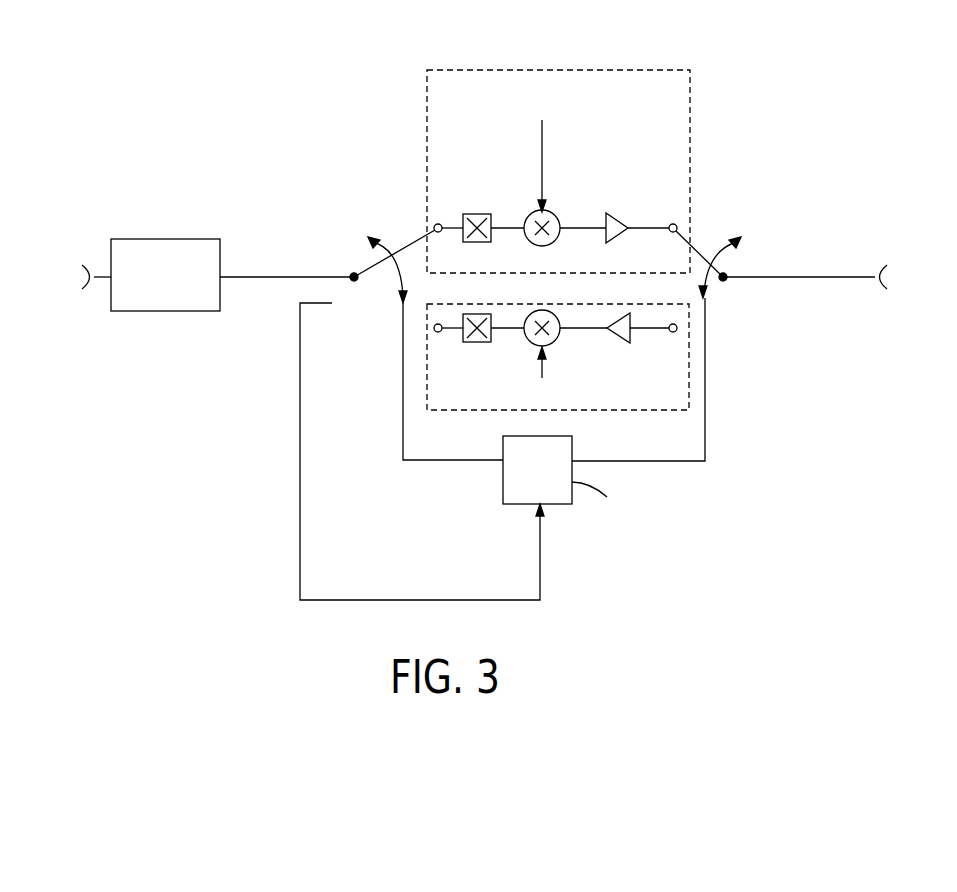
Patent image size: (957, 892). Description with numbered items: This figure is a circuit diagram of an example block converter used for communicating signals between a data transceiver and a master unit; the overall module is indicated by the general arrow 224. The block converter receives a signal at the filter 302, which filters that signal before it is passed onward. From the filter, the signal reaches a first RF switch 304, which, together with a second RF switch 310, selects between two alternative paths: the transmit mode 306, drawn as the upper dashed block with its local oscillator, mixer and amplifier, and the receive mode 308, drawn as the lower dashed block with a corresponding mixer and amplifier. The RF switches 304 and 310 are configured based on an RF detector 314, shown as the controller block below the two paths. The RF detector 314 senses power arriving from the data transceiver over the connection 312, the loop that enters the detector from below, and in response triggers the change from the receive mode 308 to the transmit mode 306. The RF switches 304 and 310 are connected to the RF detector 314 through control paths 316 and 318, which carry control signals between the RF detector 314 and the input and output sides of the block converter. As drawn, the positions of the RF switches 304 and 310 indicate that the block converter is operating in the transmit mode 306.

The RF front end module 224 is at (888, 116).
The filter 302 is at (165, 239).
The RF switch 304 is at (412, 242).
The transmit mode 306 is at (692, 122).
The receive mode 308 is at (690, 353).
The RF switch 310 is at (813, 220).
The connection 312 is at (300, 475).
The RF detector 314 is at (503, 495).
The control path 316 is at (403, 408).
The control path 318 is at (705, 425).